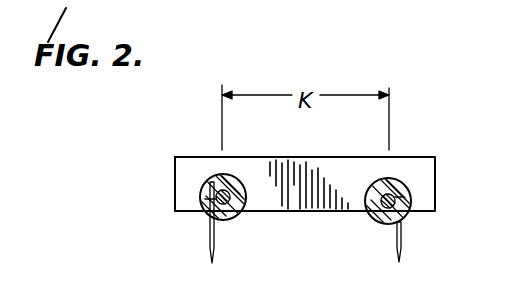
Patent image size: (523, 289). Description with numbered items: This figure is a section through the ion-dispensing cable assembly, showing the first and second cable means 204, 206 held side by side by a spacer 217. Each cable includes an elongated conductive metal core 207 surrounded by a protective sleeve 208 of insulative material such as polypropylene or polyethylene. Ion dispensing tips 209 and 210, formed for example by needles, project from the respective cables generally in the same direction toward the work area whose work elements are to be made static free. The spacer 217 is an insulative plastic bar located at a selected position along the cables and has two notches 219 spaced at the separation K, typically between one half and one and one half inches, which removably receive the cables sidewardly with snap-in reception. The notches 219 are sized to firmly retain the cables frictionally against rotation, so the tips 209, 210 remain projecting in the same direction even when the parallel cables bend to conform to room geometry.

The first cable means 204 is at (400, 172).
The second cable means 206 is at (196, 186).
The elongated conductive metal core 207 is at (237, 173).
The protective sleeve 208 is at (203, 173).
The ion dispensing tip 209 is at (209, 242).
The ion dispensing tip 210 is at (408, 229).
The spacer 217 is at (273, 205).
The notches 219 is at (205, 199).